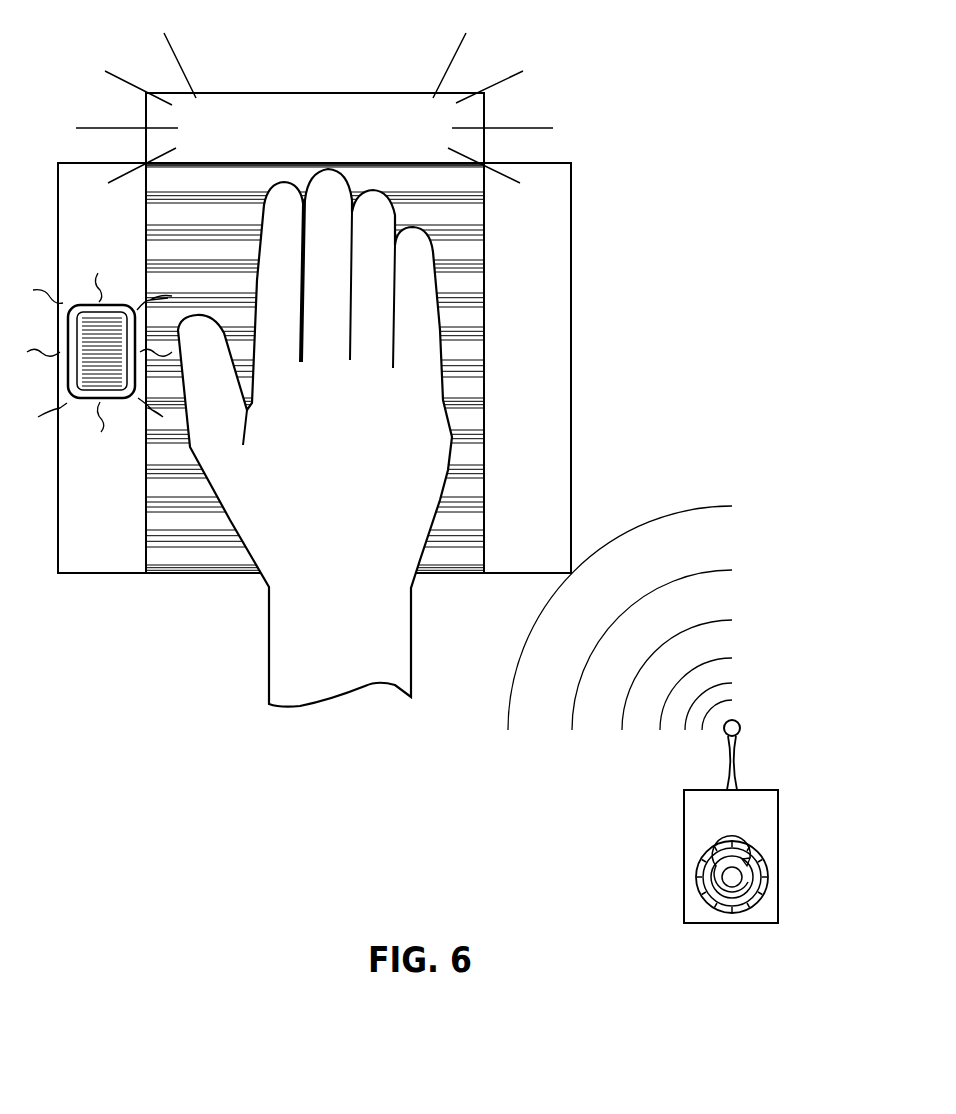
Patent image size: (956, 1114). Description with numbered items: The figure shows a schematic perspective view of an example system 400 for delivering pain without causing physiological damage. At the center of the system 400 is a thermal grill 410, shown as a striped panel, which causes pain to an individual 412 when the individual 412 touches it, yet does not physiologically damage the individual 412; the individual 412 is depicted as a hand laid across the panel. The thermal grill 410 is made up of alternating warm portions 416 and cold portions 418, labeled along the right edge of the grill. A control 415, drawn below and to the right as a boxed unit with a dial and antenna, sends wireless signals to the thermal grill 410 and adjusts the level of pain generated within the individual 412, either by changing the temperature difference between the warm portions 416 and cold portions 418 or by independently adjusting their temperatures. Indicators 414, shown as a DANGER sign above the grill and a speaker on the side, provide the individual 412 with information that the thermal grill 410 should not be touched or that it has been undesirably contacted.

The system 400 is at (633, 62).
The thermal grill 410 is at (508, 220).
The individual 412 is at (281, 649).
The indicators 414 is at (318, 92).
The control 415 is at (780, 855).
The warm portions 416 is at (498, 555).
The cold portions 418 is at (498, 520).